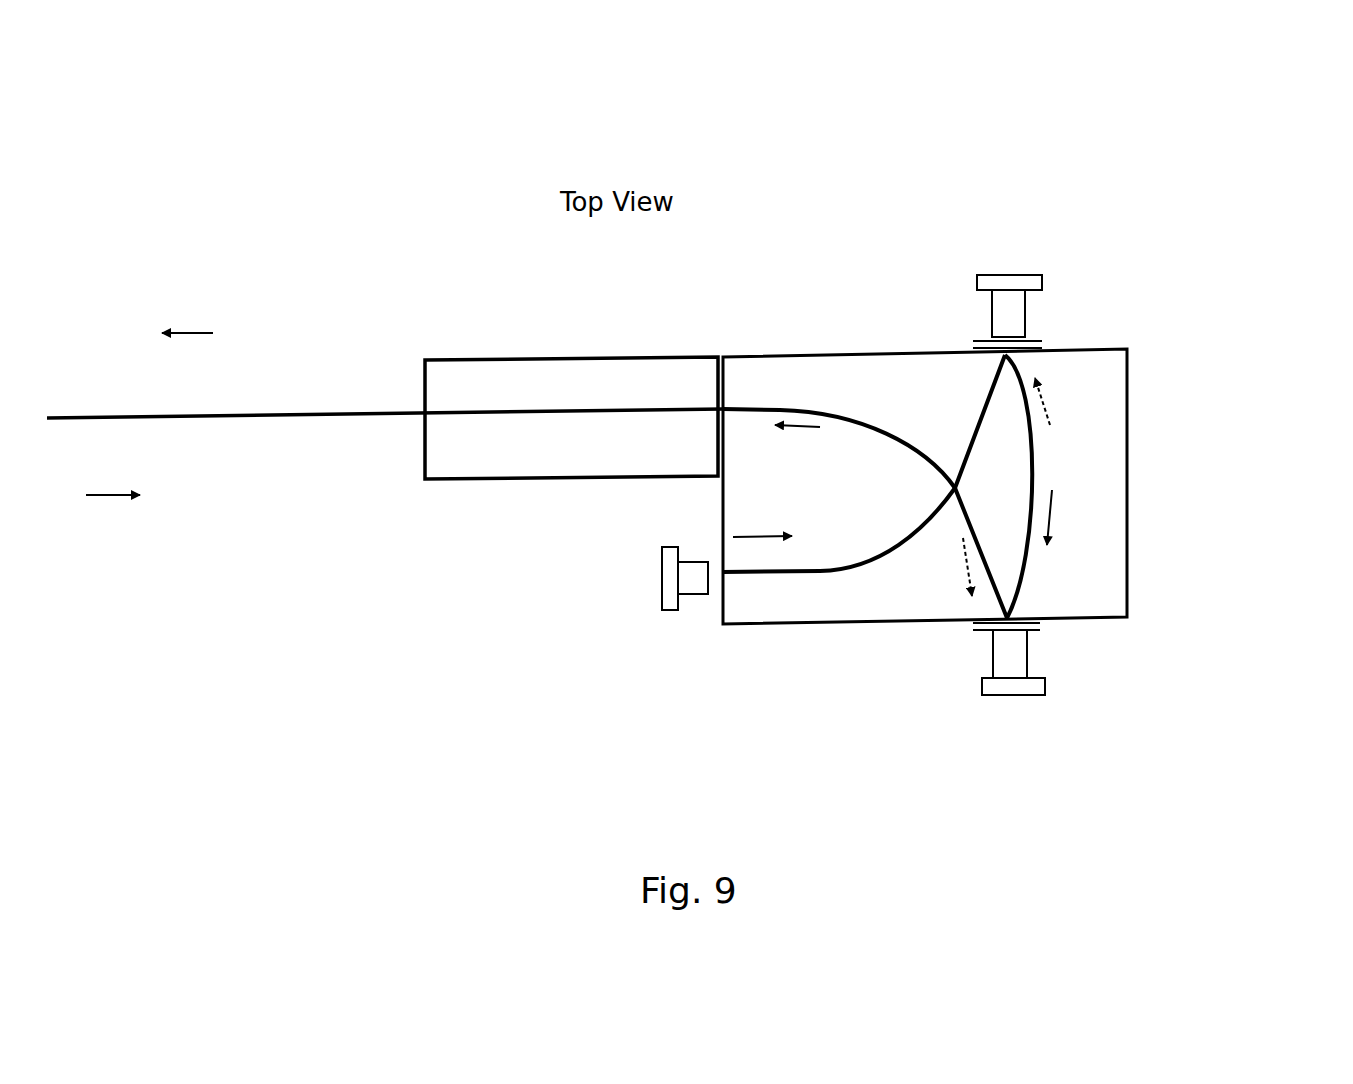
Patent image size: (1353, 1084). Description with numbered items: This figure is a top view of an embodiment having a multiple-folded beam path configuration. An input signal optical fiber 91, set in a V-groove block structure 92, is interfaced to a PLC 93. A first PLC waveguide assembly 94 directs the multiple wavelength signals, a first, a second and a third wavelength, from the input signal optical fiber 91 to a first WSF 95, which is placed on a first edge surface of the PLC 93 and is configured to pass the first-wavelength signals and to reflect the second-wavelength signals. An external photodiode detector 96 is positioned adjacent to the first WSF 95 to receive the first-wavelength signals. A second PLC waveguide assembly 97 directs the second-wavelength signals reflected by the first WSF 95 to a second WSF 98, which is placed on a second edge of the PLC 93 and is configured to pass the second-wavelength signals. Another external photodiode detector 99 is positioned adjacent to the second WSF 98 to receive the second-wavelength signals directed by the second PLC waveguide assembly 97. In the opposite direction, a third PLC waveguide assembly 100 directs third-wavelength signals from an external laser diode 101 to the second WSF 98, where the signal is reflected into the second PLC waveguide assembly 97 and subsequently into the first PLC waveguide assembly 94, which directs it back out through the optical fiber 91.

The input signal optical fiber 91 is at (277, 423).
The V-groove block structure 92 is at (413, 455).
The PLC 93 is at (1083, 553).
The first PLC waveguide assembly 94 is at (827, 405).
The first WSF 95 is at (1037, 632).
The external photodiode detector 96 is at (1003, 667).
The second PLC waveguide assembly 97 is at (1032, 460).
The second WSF 98 is at (1042, 340).
The external photodiode detector 99 is at (990, 305).
The third PLC waveguide assembly 100 is at (845, 570).
The external laser diode 101 is at (663, 567).